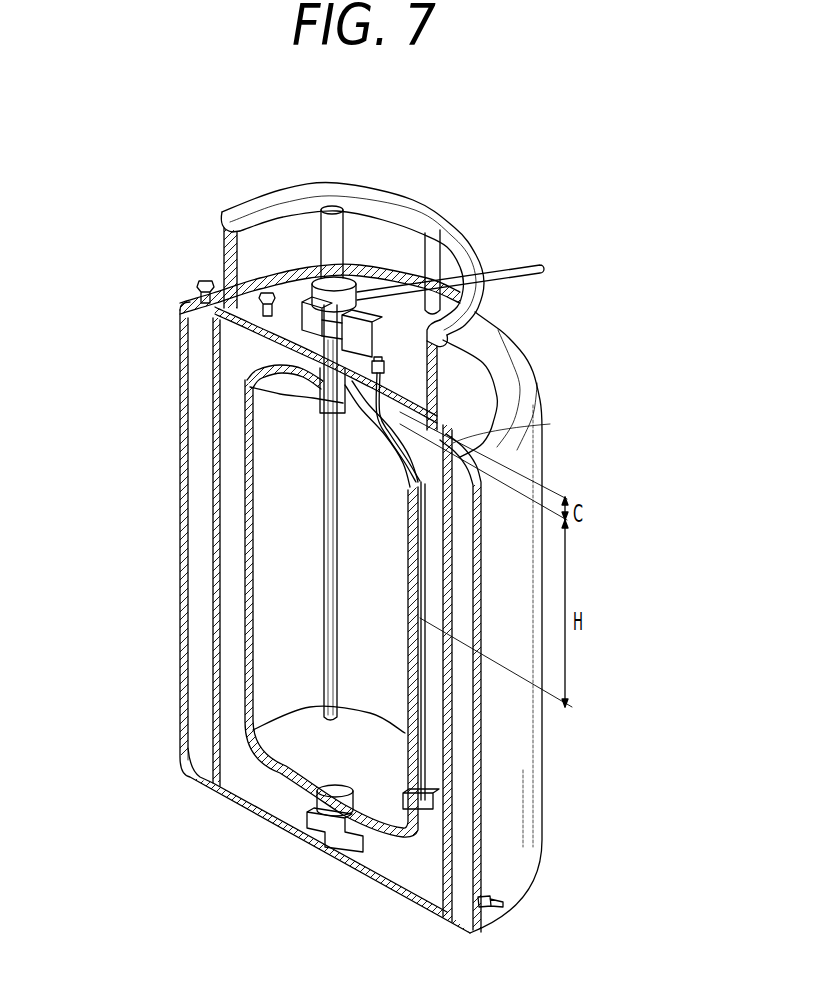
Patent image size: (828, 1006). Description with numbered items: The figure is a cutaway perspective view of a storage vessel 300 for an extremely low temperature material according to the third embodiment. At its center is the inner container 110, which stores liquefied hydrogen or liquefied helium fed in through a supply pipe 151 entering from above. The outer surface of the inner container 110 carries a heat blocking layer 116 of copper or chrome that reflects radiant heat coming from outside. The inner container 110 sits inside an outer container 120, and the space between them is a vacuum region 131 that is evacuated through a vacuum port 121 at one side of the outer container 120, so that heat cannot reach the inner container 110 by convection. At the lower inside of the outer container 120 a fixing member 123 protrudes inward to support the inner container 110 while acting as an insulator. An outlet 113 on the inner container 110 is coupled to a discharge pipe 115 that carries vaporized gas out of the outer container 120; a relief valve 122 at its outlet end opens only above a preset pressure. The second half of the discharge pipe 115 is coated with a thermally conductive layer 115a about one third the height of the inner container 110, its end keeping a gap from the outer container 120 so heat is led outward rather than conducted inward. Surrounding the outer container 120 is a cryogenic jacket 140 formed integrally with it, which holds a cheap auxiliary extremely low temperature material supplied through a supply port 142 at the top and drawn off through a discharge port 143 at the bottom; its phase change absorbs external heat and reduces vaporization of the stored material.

The storage vessel 300 is at (348, 98).
The inner container 110 is at (237, 668).
The outlet 113 is at (440, 800).
The discharge pipe 115 is at (420, 757).
The thermally conductive layer 115a is at (497, 425).
The heat blocking layer 116 is at (240, 615).
The outer container 120 is at (213, 546).
The vacuum port 121 is at (248, 290).
The relief valve 122 is at (383, 358).
The fixing member 123 is at (325, 840).
The vacuum region 131 is at (233, 474).
The cryogenic jacket 140 is at (477, 730).
The supply port 142 is at (198, 292).
The discharge port 143 is at (505, 897).
The supply pipe 151 is at (327, 247).